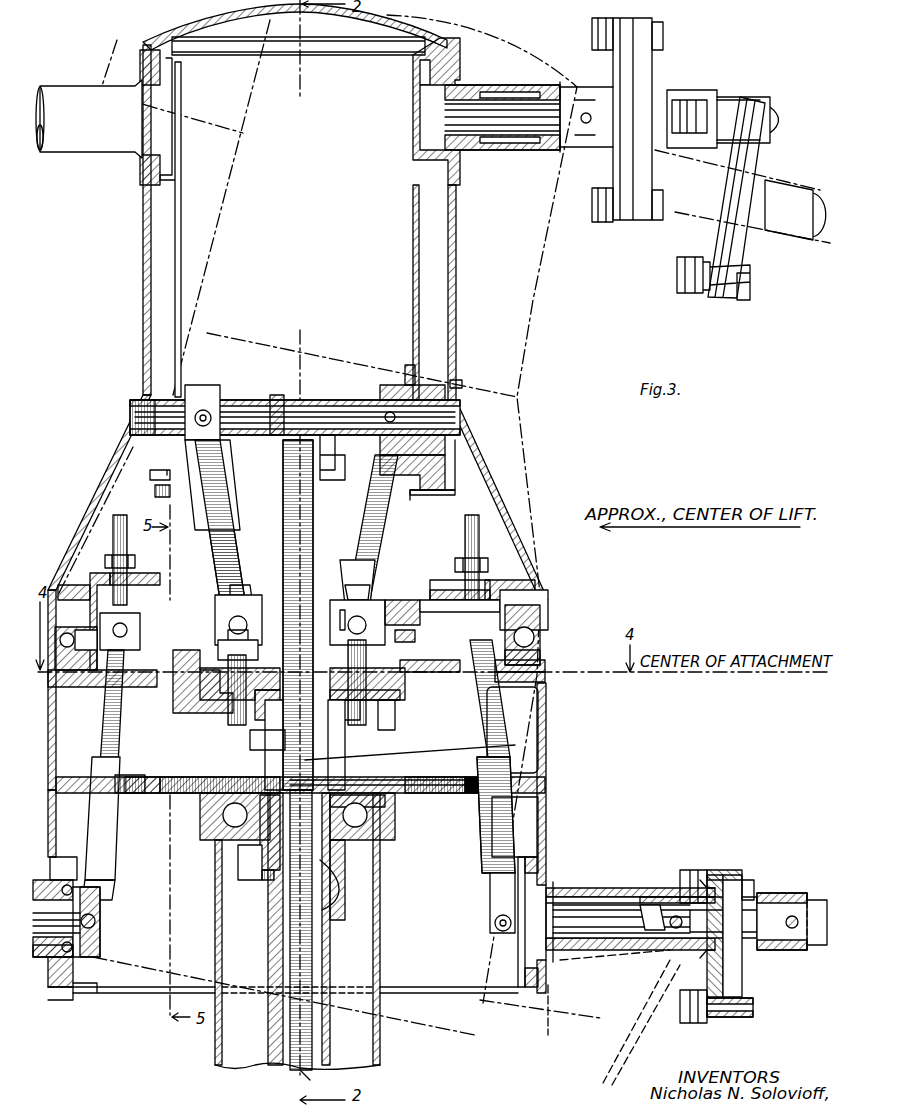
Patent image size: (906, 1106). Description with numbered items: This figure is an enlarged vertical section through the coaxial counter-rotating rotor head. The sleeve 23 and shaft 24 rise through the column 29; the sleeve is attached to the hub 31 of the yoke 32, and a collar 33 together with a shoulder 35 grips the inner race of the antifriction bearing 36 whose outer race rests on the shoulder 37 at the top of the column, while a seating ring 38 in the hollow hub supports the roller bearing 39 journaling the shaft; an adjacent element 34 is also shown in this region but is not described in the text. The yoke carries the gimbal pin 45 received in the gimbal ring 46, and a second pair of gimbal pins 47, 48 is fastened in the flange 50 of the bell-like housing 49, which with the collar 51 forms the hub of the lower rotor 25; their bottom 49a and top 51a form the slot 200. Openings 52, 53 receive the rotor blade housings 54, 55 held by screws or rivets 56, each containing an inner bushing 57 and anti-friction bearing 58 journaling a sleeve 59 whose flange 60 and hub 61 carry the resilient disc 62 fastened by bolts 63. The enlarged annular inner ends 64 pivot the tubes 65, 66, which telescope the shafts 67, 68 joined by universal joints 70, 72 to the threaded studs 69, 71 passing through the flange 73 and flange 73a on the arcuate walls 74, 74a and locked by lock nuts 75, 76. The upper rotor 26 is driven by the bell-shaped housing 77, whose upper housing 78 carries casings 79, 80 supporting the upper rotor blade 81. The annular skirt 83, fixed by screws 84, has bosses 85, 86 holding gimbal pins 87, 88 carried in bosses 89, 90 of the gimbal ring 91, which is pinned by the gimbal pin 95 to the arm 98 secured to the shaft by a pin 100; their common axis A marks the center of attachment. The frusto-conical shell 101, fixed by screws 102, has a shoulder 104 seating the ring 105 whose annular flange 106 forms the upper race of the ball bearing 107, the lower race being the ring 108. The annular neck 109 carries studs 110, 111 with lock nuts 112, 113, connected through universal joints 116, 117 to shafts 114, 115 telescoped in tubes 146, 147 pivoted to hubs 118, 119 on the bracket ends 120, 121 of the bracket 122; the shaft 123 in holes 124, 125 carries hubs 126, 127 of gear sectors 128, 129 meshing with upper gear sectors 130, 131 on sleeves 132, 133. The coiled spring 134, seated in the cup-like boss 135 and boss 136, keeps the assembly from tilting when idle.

The sleeve 23 is at (330, 968).
The shaft 24 is at (312, 1035).
The lower rotor 25 is at (638, 792).
The upper rotor 26 is at (633, 255).
The column 29 is at (382, 932).
The hub 31 is at (260, 915).
The yoke 32 is at (380, 765).
The collar 33 is at (248, 875).
The bearing sleeve 34 is at (250, 850).
The shoulder 35 is at (215, 777).
The antifriction bearing 36 is at (205, 838).
The shoulder 37 is at (208, 845).
The seating ring 38 is at (345, 895).
The roller bearing 39 is at (380, 835).
The gimbal pin 45 is at (360, 600).
The gimbal ring 46 is at (90, 690).
The gimbal pin 47 is at (72, 690).
The gimbal pin 48 is at (505, 700).
The bell-like housing 49 is at (556, 741).
The bottom 49a is at (145, 780).
The flange 50 is at (548, 660).
The collar 51 is at (548, 822).
The top 51a is at (410, 800).
The opening 52 is at (52, 1000).
The opening 53 is at (548, 1035).
The rotor blade housing 54 is at (90, 990).
The rotor blade housing 55 is at (590, 880).
The screws or rivets 56 is at (65, 840).
The inner bushing 57 is at (95, 921).
The anti-friction bearing 58 is at (75, 960).
The sleeve 59 is at (90, 940).
The flange 60 is at (700, 865).
The hub 61 is at (690, 895).
The resilient disc 62 is at (745, 880).
The bolts 63 is at (735, 870).
The enlarged annular inner end 64 is at (100, 900).
The tube 65 is at (110, 850).
The tube 66 is at (490, 850).
The shaft 67 is at (120, 750).
The shaft 68 is at (470, 760).
The threaded stud 69 is at (105, 530).
The universal joint 70 is at (130, 672).
The threaded stud 71 is at (460, 595).
The universal joint 72 is at (430, 700).
The horizontal flange 73 is at (140, 578).
The flange 73a is at (440, 580).
The arcuate wall 74 is at (90, 580).
The arcuate wall 74a is at (510, 585).
The lock nut 75 is at (135, 550).
The lock nut 76 is at (480, 560).
The bell-shaped housing 77 is at (490, 347).
The upper housing 78 is at (455, 290).
The casing 79 is at (520, 80).
The casing 80 is at (70, 85).
The upper rotor blade 81 is at (706, 90).
The annular skirt 83 is at (420, 515).
The screws 84 is at (150, 475).
The boss 85 is at (215, 600).
The boss 86 is at (395, 630).
The gimbal pin 87 is at (180, 700).
The gimbal pin 88 is at (420, 690).
The boss 89 is at (212, 650).
The boss 90 is at (398, 650).
The gimbal ring 91 is at (395, 700).
The gimbal pin 95 is at (280, 755).
The arm 98 is at (352, 615).
The pin 100 is at (270, 690).
The frusto-conical shell 101 is at (540, 490).
The screws 102 is at (465, 385).
The shoulder 104 is at (548, 595).
The ring 105 is at (548, 610).
The annular flange 106 is at (548, 625).
The ball bearing 107 is at (548, 640).
The ring 108 is at (548, 672).
The annular neck 109 is at (388, 730).
The stud 110 is at (350, 758).
The stud 111 is at (262, 735).
The lock nut 112 is at (340, 720).
The lock nut 113 is at (260, 715).
The shaft 114 is at (355, 580).
The shaft 115 is at (215, 595).
The universal joint 116 is at (390, 610).
The universal joint 117 is at (245, 590).
The hub 118 is at (380, 385).
The hub 119 is at (210, 385).
The bracket end 120 is at (335, 400).
The bracket end 121 is at (245, 400).
The bracket 122 is at (304, 385).
The shaft 123 is at (320, 380).
The hole 124 is at (460, 435).
The hole 125 is at (145, 430).
The hub 126 is at (420, 380).
The hub 127 is at (158, 395).
The gear sector 128 is at (410, 312).
The gear sector 129 is at (190, 318).
The upper gear sector 130 is at (412, 235).
The upper gear sector 131 is at (182, 236).
The sleeve 132 is at (412, 140).
The sleeve 133 is at (178, 150).
The coiled spring 134 is at (282, 530).
The cup-like boss 135 is at (250, 610).
The boss 136 is at (322, 462).
The tube 146 is at (362, 530).
The tube 147 is at (233, 560).
The slot 200 is at (135, 795).
The common axis A is at (672, 675).